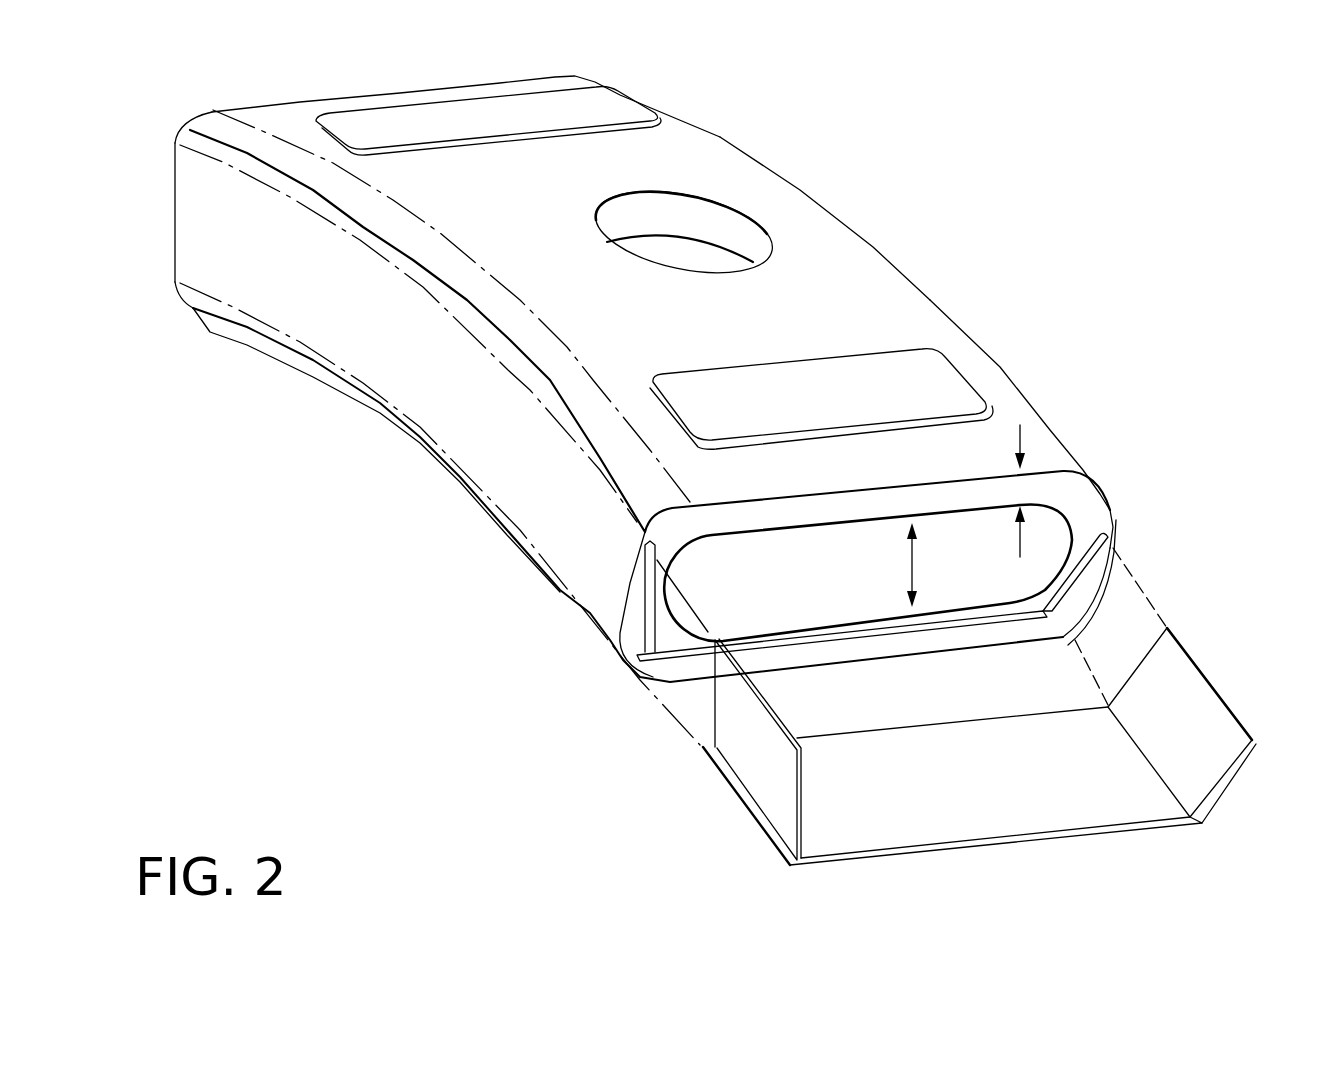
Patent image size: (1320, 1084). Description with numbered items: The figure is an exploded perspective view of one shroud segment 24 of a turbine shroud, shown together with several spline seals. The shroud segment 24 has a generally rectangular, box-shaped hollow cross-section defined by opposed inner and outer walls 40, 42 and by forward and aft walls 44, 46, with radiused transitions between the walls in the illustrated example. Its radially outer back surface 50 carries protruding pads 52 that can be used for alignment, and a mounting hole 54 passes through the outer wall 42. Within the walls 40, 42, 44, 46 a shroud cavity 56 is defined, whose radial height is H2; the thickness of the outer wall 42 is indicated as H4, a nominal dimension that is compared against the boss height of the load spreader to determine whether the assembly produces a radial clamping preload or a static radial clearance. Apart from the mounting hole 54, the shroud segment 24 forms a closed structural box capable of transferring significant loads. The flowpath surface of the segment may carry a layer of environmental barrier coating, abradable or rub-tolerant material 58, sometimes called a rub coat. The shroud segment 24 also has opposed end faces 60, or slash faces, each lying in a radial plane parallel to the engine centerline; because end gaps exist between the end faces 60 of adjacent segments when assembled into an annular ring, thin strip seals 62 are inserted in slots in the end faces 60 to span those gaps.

The shroud segment 24 is at (924, 162).
The inner wall 40 is at (456, 483).
The outer wall 42 is at (711, 150).
The forward wall 44 is at (228, 243).
The aft wall 46 is at (929, 292).
The back surface 50 is at (924, 320).
The protruding pad 52 is at (612, 104).
The mounting hole 54 is at (733, 218).
The shroud cavity 56 is at (791, 605).
The rub-tolerant material 58 is at (682, 683).
The end face 60 is at (318, 108).
The seal 62 is at (760, 772).
The radial height of the shroud cavity H2 is at (911, 568).
The thickness of the outer wall H4 is at (1022, 436).